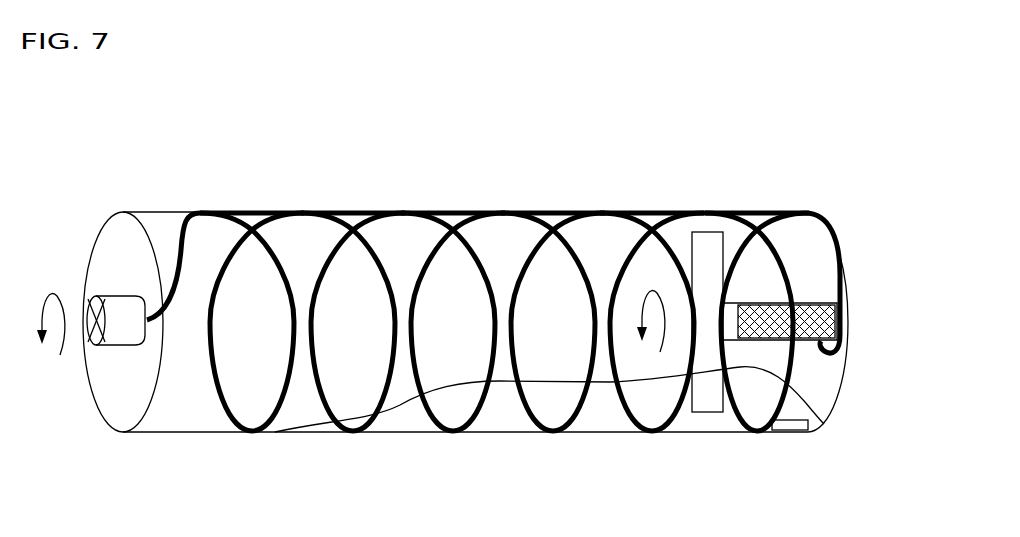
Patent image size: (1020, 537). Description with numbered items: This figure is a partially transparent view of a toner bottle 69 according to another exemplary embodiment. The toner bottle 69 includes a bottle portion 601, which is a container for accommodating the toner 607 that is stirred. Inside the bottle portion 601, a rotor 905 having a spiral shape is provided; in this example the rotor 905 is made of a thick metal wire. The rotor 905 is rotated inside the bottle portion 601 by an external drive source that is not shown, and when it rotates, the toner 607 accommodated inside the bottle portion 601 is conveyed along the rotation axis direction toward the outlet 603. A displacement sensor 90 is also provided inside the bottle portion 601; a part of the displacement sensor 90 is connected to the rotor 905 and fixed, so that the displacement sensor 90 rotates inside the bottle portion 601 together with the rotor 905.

The toner bottle 69 is at (248, 152).
The displacement sensor 90 is at (692, 232).
The rotor 905 is at (737, 214).
The bottle portion 601 is at (843, 385).
The outlet 603 is at (797, 433).
The toner 607 is at (613, 423).